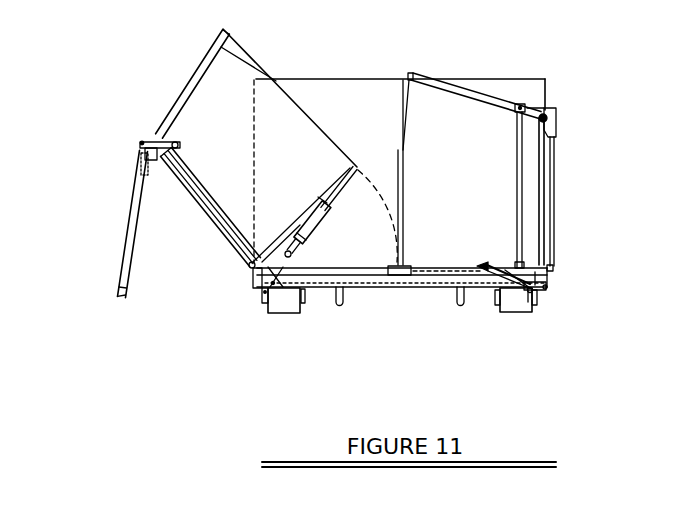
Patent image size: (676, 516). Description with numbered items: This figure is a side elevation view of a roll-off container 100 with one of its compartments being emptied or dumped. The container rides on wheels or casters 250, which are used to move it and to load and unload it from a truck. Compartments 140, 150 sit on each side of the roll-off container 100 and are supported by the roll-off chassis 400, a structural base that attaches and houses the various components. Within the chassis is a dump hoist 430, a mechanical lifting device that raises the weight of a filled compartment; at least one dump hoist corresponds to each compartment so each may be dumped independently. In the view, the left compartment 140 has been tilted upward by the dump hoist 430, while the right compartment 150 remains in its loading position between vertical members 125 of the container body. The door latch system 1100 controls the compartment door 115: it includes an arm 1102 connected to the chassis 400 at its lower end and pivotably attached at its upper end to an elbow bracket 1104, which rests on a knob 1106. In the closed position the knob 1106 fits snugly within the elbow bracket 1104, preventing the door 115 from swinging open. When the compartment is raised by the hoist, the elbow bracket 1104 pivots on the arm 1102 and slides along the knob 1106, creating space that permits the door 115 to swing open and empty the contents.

The roll-off container 100 is at (350, 76).
The compartment 140 is at (192, 87).
The door latch system 1100 is at (157, 141).
The elbow bracket 1104 is at (141, 145).
The knob 1106 is at (155, 153).
The compartment door 115 is at (135, 198).
The arm 1102 is at (224, 207).
The dump hoist 430 is at (290, 255).
The compartment 150 is at (490, 98).
The vertical post 125 is at (553, 167).
The roll-off chassis 400 is at (545, 278).
The wheels or casters 250 is at (532, 313).